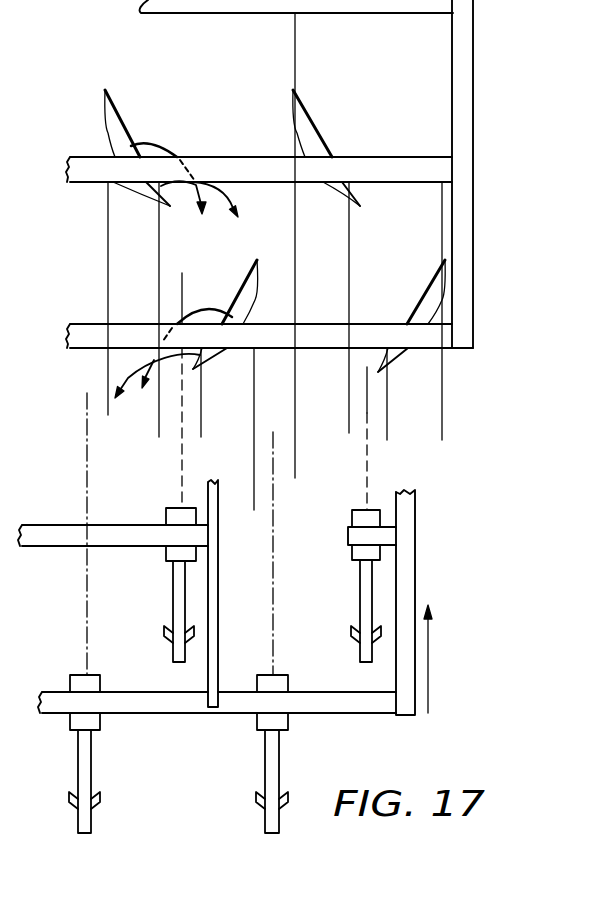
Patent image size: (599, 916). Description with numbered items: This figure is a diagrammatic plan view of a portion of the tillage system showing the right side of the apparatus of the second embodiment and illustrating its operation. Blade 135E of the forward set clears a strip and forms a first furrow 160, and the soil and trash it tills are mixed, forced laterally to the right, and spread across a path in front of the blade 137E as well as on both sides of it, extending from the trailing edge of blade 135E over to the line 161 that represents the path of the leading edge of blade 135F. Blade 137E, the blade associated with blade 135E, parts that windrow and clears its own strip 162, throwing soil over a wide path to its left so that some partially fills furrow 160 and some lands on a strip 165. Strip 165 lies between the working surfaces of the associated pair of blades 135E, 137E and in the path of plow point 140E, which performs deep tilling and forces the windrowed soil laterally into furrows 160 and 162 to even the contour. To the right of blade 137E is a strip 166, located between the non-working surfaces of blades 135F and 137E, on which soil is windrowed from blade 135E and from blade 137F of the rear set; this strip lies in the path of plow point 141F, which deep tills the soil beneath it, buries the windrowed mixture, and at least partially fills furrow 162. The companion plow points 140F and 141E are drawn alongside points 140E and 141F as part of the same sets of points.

The blade 135E is at (124, 108).
The blade 135F is at (309, 108).
The blade 137E is at (246, 277).
The blade 137F is at (432, 280).
The first furrow 160 is at (152, 273).
The line 161 is at (296, 242).
The strip 162 is at (244, 419).
The strip 165 is at (194, 419).
The strip 166 is at (290, 419).
The plow point 140E is at (166, 584).
The plow point 140F is at (353, 586).
The plow point 141E is at (101, 776).
The plow point 141F is at (291, 774).